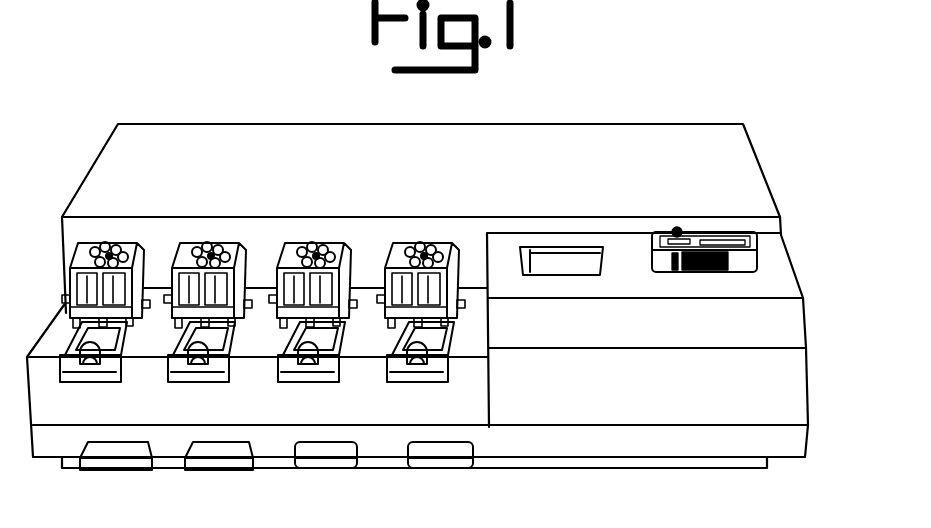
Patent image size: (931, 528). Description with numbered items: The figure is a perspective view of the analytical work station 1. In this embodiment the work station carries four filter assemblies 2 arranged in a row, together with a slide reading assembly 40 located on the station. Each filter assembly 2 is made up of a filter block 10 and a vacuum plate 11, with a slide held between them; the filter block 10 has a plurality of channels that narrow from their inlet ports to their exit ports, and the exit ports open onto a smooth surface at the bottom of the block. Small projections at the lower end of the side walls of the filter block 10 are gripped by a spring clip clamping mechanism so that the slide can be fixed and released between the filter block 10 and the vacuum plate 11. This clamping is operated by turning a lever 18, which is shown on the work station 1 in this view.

The analytical work station 1 is at (748, 162).
The filter assembly 2 is at (443, 243).
The filter block 10 is at (345, 243).
The vacuum plate 11 is at (427, 390).
The lever 18 is at (325, 463).
The slide reading assembly 40 is at (720, 226).